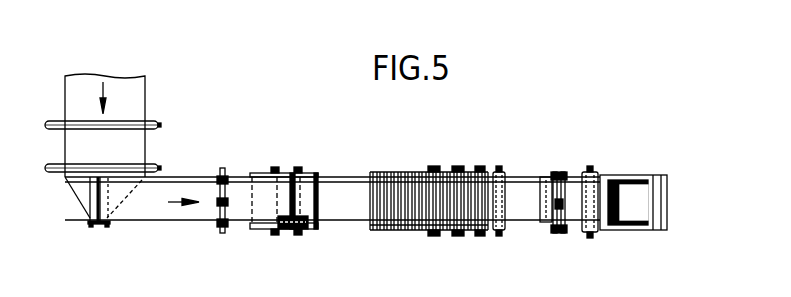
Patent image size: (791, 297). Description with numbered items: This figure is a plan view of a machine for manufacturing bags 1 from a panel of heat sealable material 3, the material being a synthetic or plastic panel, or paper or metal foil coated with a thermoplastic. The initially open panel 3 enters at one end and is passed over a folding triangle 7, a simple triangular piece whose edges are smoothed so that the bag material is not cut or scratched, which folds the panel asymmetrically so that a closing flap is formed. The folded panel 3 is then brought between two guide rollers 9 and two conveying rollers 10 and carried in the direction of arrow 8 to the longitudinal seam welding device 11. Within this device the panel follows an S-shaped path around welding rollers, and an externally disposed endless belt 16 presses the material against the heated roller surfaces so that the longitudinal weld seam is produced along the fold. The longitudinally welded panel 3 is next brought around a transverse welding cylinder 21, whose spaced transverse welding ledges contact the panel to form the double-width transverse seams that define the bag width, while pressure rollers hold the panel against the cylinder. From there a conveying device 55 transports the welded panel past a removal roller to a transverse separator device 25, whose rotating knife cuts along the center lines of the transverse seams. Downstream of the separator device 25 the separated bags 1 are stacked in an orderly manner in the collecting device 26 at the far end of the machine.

The bag 1 is at (631, 188).
The panel of heat sealable material 3 is at (137, 93).
The folding triangle 7 is at (80, 190).
The arrow 8 is at (160, 203).
The guide rollers 9 is at (90, 222).
The conveying rollers 10 is at (209, 186).
The longitudinal seam welding device 11 is at (285, 156).
The endless belt 16 is at (291, 232).
The transverse welding cylinder 21 is at (419, 159).
The transverse separator device 25 is at (600, 165).
The collecting device 26 is at (655, 229).
The conveying device 55 is at (552, 238).